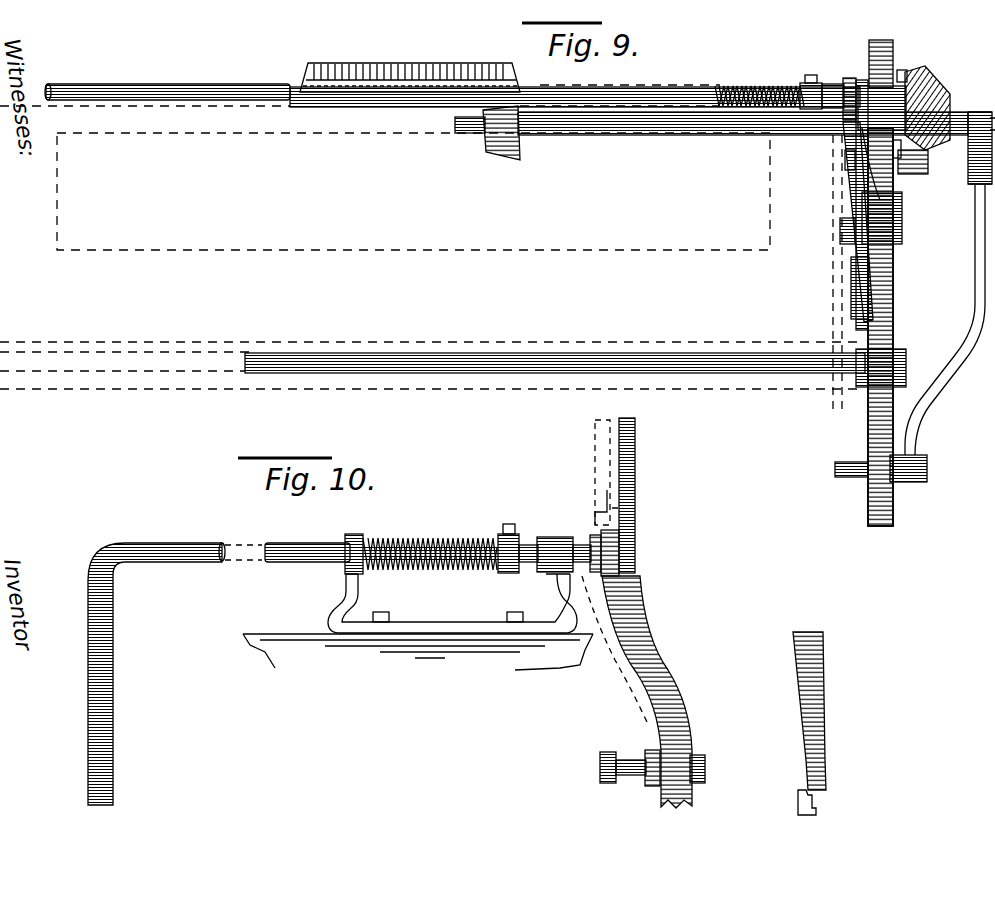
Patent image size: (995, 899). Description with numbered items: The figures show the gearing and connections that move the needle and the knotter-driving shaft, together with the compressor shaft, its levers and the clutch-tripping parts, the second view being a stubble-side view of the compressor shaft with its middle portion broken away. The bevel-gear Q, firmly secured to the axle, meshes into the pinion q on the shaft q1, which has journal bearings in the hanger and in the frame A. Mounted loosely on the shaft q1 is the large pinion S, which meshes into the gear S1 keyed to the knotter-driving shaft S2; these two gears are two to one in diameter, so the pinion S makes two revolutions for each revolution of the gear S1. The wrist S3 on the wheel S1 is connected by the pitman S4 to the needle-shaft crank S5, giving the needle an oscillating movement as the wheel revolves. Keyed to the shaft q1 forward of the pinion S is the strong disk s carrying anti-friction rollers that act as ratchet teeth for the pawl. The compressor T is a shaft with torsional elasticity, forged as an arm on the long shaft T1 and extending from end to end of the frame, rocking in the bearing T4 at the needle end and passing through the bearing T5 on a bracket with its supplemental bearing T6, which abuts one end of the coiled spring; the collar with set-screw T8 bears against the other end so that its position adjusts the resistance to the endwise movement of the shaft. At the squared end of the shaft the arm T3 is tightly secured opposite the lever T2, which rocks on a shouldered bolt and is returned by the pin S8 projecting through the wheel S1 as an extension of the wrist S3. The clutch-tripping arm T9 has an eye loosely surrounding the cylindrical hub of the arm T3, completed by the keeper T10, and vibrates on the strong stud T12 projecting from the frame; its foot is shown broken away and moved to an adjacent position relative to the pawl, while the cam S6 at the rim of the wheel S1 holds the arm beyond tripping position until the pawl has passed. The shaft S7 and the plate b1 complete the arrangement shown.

In FIG. 9, the frame A is at (430, 247).
In FIG. 9, the shaft S7 is at (205, 84).
In FIG. 9, the long shaft T1 is at (410, 100).
In FIG. 10, the long shaft T1 is at (266, 538).
In FIG. 9, the bevel-gear Q is at (410, 62).
In FIG. 9, the pinion q is at (500, 150).
In FIG. 9, the shaft q1 is at (666, 135).
In FIG. 9, the bearing T4 is at (759, 96).
In FIG. 10, the bearing T4 is at (432, 533).
In FIG. 9, the collar with set-screw T8 is at (811, 92).
In FIG. 10, the collar with set-screw T8 is at (512, 522).
In FIG. 9, the bearing T5 is at (833, 96).
In FIG. 10, the bearing T5 is at (565, 520).
In FIG. 9, the stud T12 is at (843, 168).
In FIG. 10, the stud T12 is at (604, 480).
In FIG. 9, the arm T3 is at (858, 80).
In FIG. 10, the arm T3 is at (640, 470).
In FIG. 9, the gear S1 is at (893, 300).
In FIG. 9, the large pinion S is at (880, 38).
In FIG. 9, the needle-shaft crank S5 is at (935, 92).
In FIG. 9, the disk s is at (928, 165).
In FIG. 9, the clutch-tripping arm T9 is at (880, 185).
In FIG. 10, the clutch-tripping arm T9 is at (676, 722).
In FIG. 9, the keeper T10 is at (855, 212).
In FIG. 9, the cam S6 is at (902, 238).
In FIG. 9, the lever T2 is at (852, 272).
In FIG. 9, the pitman S4 is at (976, 292).
In FIG. 9, the wrist S3 is at (927, 468).
In FIG. 9, the pin S8 is at (848, 482).
In FIG. 9, the knotter-driving shaft S2 is at (575, 357).
In FIG. 10, the compressor T is at (140, 674).
In FIG. 10, the supplemental bearing T6 is at (358, 533).
In FIG. 10, the frame plate b1 is at (418, 622).